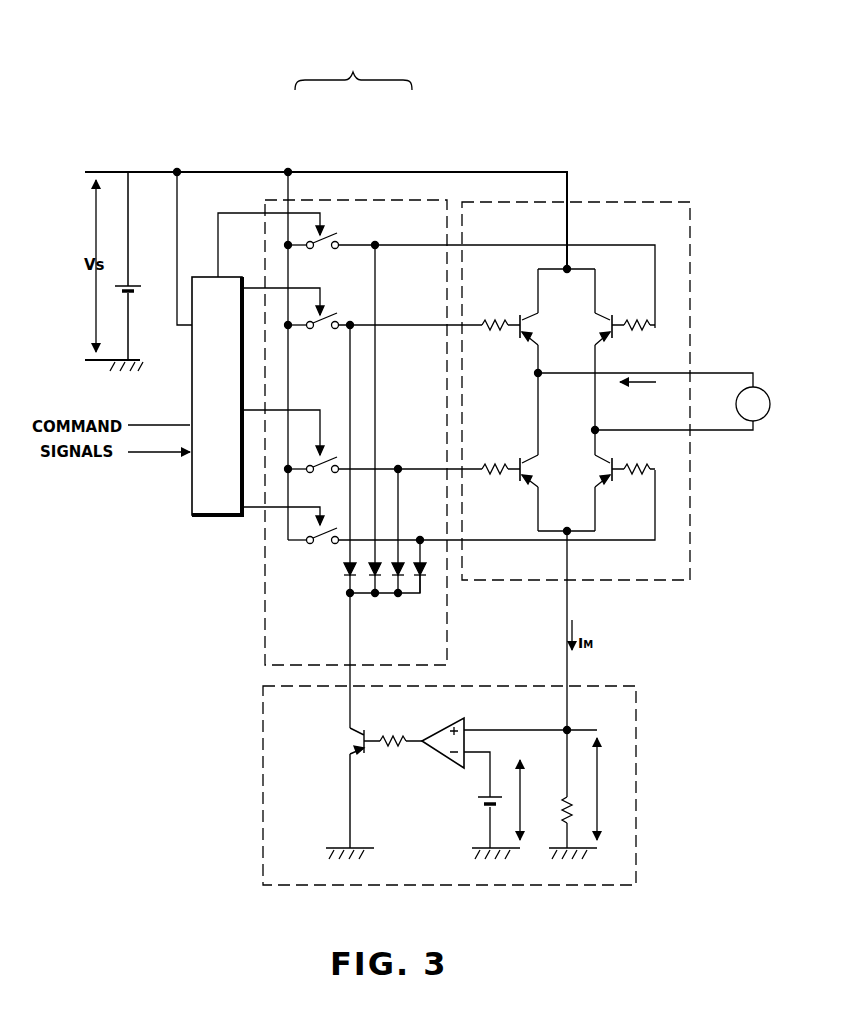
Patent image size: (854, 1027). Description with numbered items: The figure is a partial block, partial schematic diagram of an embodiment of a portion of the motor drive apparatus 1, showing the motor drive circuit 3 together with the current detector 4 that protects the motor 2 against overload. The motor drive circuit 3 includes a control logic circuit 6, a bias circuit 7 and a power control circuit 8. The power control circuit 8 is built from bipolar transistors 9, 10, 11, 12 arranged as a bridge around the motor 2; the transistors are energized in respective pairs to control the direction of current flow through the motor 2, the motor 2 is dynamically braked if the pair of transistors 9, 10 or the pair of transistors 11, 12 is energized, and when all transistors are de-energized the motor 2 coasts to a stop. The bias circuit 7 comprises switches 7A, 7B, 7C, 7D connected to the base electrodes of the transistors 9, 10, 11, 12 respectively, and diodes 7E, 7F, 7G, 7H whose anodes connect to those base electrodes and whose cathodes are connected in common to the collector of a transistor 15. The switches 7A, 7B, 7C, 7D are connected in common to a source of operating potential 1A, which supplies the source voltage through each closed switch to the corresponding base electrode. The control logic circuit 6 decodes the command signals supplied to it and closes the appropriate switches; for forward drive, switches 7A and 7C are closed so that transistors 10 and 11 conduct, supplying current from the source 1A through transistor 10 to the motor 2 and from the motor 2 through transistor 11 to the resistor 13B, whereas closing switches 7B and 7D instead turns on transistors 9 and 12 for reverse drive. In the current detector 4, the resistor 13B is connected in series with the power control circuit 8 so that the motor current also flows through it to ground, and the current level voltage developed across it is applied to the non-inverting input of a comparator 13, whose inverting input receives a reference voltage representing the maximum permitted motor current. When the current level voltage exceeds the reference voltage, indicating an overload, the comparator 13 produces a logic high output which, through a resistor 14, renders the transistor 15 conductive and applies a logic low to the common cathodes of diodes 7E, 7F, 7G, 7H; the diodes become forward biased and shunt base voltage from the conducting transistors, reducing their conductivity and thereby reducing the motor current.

The motor drive apparatus 1 is at (620, 98).
The source of operating potential 1A is at (132, 283).
The motor 2 is at (757, 386).
The motor drive circuit 3 is at (353, 69).
The current detector 4 is at (640, 760).
The control logic circuit 6 is at (199, 276).
The bias circuit 7 is at (336, 200).
The switch 7A is at (322, 250).
The switch 7B is at (324, 334).
The switch 7C is at (322, 480).
The switch 7D is at (320, 548).
The diode 7E is at (344, 577).
The diode 7F is at (369, 578).
The diode 7G is at (394, 576).
The diode 7H is at (425, 578).
The power control circuit 8 is at (478, 202).
The transistor 9 is at (518, 322).
The transistor 10 is at (614, 320).
The transistor 11 is at (518, 463).
The transistor 12 is at (614, 478).
The comparator 13 is at (447, 760).
The resistor 13B is at (563, 795).
The resistor 14 is at (392, 734).
The transistor 15 is at (368, 750).